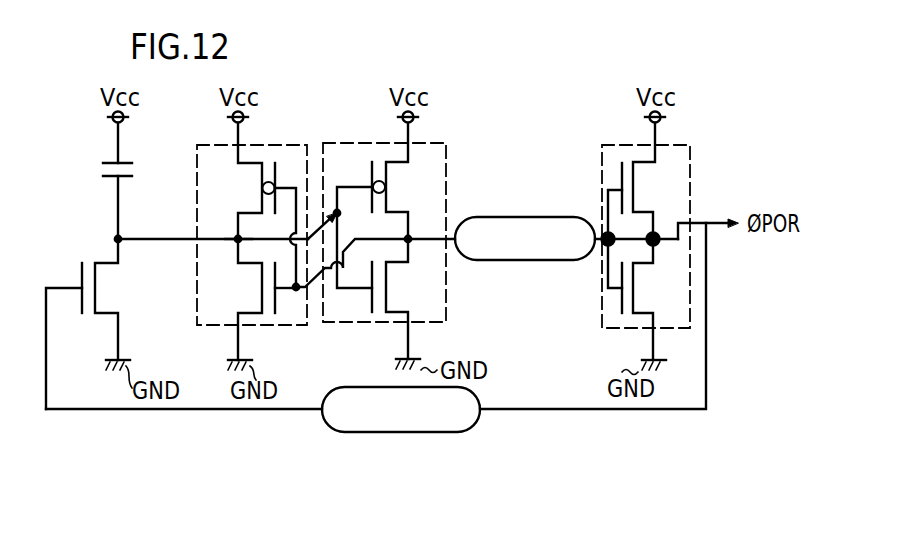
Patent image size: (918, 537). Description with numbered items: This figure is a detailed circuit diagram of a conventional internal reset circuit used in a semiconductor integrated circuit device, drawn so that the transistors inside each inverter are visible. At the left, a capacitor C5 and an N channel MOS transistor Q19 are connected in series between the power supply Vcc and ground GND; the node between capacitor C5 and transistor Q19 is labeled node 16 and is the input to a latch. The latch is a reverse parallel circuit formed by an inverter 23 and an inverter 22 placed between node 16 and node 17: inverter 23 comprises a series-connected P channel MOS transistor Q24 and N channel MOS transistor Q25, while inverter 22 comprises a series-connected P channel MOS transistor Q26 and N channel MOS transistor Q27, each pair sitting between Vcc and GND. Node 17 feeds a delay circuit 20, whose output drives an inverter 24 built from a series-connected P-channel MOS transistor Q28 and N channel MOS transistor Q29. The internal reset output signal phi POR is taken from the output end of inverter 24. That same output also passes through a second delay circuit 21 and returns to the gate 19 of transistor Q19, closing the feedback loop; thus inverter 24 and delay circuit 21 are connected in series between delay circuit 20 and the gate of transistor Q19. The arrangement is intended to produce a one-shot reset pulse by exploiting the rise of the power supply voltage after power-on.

The output node of inverter 23 16 is at (238, 237).
The output node of inverter 22 17 is at (411, 236).
The gate input of transistor Q19 19 is at (79, 287).
The delay circuit 20 is at (569, 216).
The delay circuit 21 is at (460, 434).
The inverter 22 is at (352, 143).
The inverter 23 is at (213, 145).
The inverter 24 is at (613, 145).
The capacitor C5 is at (138, 172).
The N channel MOS transistor Q19 is at (105, 288).
The P channel MOS transistor Q24 is at (260, 188).
The N channel MOS transistor Q25 is at (260, 288).
The P channel MOS transistor Q26 is at (389, 186).
The N channel MOS transistor Q27 is at (392, 289).
The P-channel MOS transistor Q28 is at (636, 183).
The N channel MOS transistor Q29 is at (656, 299).